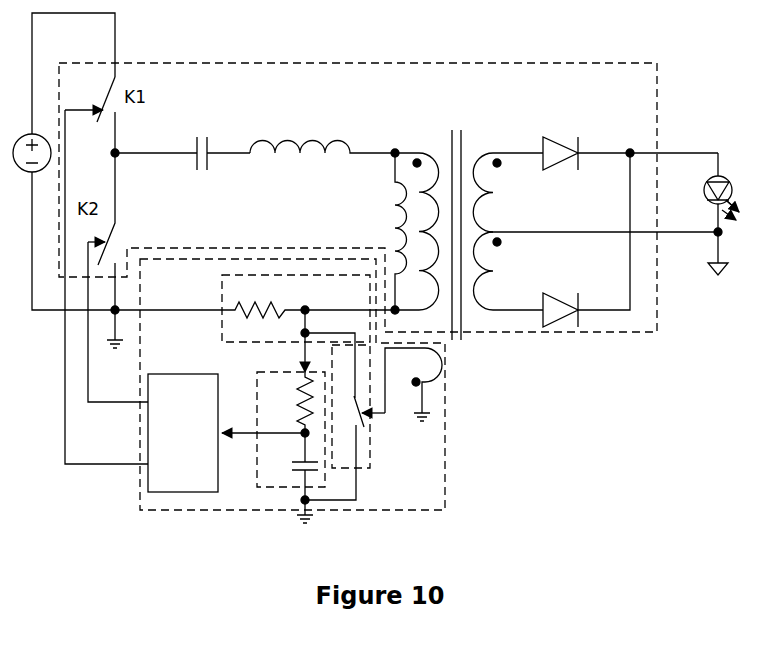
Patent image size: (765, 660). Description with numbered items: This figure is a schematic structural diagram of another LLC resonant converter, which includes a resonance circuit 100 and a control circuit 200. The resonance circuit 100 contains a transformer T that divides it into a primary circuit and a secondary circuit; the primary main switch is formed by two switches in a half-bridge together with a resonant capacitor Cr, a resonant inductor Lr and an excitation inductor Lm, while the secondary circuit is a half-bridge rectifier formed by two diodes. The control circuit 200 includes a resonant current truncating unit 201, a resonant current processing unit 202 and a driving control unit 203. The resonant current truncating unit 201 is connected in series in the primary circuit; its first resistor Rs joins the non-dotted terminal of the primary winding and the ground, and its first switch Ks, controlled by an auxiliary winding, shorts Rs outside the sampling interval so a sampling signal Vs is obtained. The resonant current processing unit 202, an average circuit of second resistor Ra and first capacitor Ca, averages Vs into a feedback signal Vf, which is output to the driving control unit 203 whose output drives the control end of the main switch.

The resonance circuit 100 is at (598, 330).
The control circuit 200 is at (445, 430).
The resonant current truncating unit 201 is at (222, 306).
The resonant current processing unit 202 is at (255, 396).
The driving control unit 203 is at (190, 374).